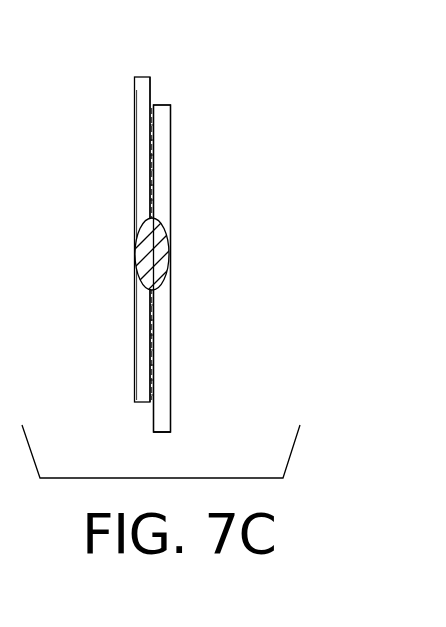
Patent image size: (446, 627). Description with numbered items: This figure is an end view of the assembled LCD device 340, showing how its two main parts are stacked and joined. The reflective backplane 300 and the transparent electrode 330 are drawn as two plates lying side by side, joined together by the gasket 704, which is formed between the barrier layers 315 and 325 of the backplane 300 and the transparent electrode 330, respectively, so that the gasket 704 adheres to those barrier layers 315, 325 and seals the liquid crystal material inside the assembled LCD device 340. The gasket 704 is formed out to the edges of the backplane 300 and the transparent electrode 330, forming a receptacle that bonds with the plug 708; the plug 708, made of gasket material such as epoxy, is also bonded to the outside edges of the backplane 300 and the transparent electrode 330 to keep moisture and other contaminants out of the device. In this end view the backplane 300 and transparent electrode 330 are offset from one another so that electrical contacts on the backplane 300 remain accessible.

The reflective backplane 300 is at (170, 163).
The barrier layer 315 is at (150, 83).
The barrier layer 325 is at (154, 426).
The transparent electrode 330 is at (135, 338).
The assembled LCD device 340 is at (202, 375).
The gasket 704 is at (152, 120).
The plug 708 is at (137, 251).